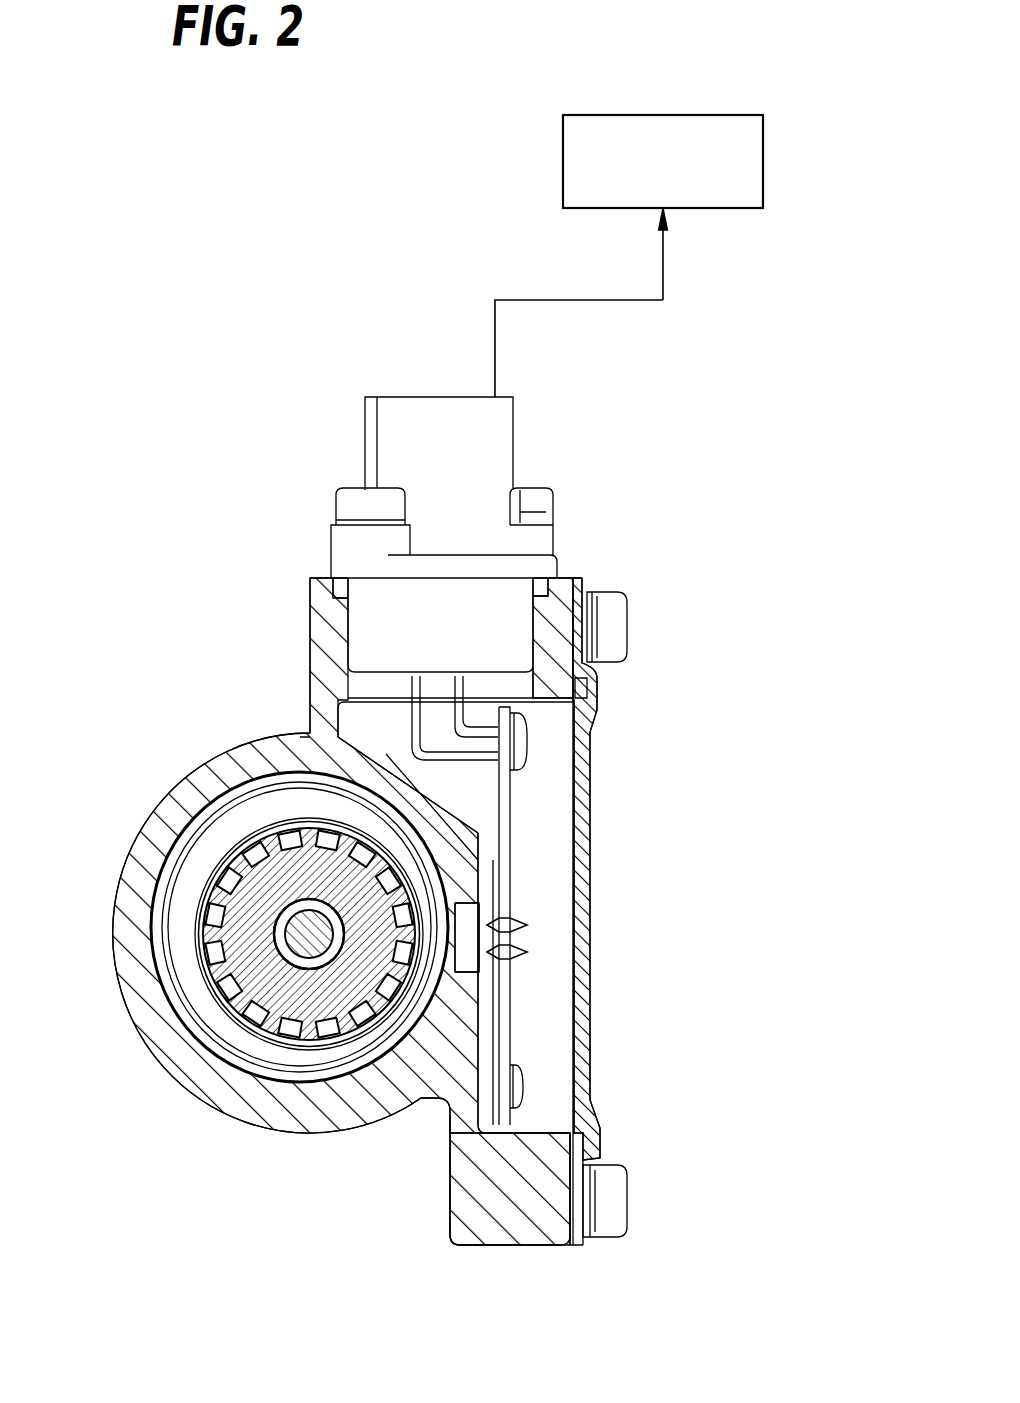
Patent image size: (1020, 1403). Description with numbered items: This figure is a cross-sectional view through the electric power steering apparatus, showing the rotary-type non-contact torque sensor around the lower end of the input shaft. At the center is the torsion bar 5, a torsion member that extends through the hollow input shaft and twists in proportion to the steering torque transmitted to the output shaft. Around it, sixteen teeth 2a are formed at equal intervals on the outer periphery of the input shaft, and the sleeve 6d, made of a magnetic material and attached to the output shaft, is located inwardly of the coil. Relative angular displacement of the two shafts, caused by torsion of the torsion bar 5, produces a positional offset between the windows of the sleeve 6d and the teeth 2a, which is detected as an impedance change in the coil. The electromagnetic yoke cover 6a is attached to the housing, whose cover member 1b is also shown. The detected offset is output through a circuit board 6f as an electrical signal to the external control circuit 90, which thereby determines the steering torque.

The external control circuit 90 is at (766, 150).
The torsion bar 5 is at (303, 918).
The sleeve 6d is at (212, 868).
The circuit board 6f is at (507, 878).
The teeth 2a is at (287, 1093).
The electromagnetic yoke cover 6a is at (312, 1088).
The cover member 1b is at (451, 1245).